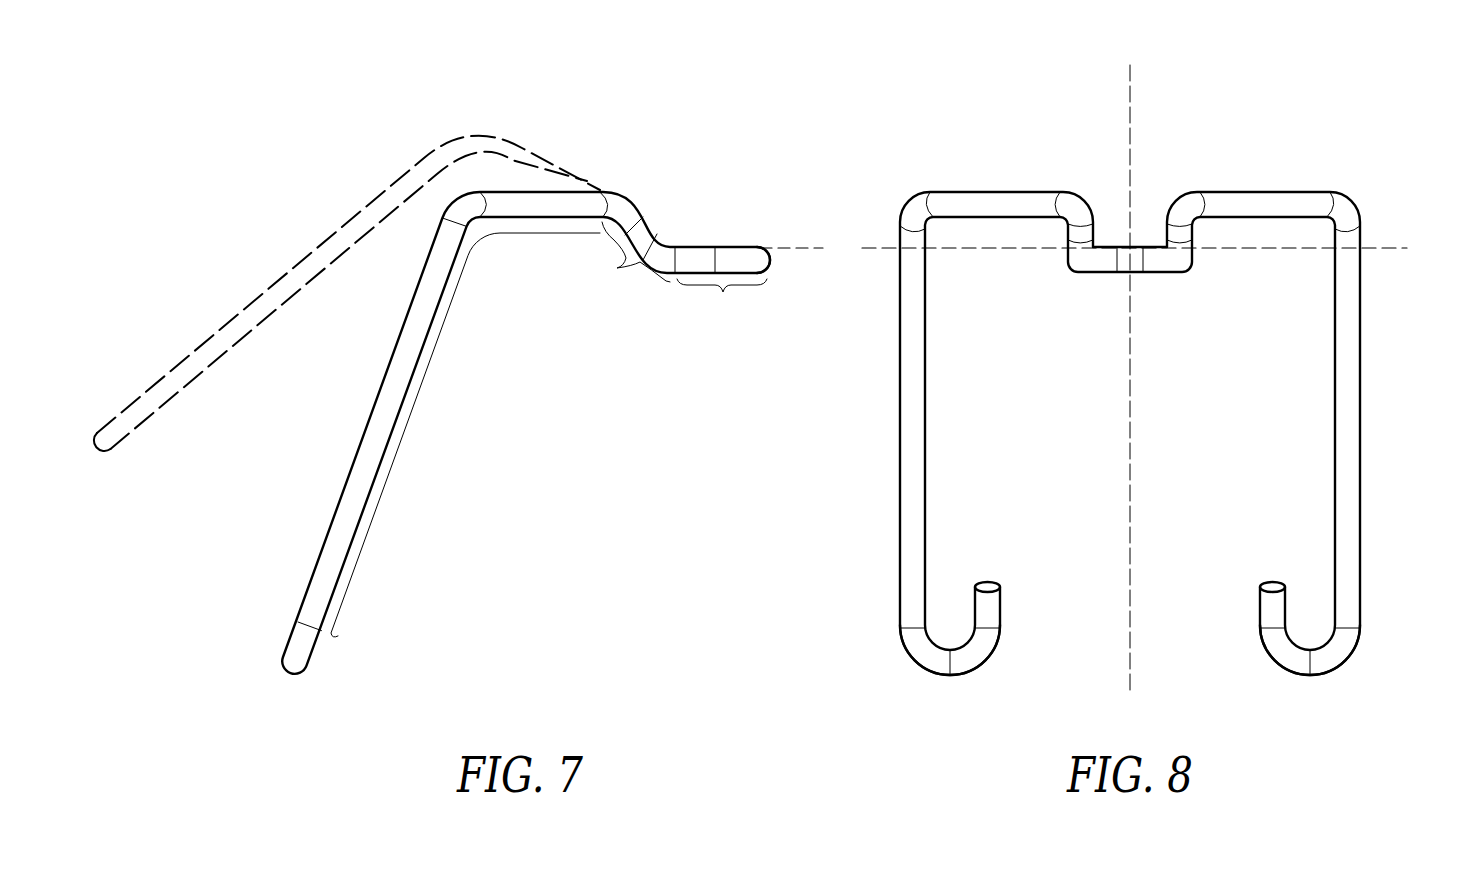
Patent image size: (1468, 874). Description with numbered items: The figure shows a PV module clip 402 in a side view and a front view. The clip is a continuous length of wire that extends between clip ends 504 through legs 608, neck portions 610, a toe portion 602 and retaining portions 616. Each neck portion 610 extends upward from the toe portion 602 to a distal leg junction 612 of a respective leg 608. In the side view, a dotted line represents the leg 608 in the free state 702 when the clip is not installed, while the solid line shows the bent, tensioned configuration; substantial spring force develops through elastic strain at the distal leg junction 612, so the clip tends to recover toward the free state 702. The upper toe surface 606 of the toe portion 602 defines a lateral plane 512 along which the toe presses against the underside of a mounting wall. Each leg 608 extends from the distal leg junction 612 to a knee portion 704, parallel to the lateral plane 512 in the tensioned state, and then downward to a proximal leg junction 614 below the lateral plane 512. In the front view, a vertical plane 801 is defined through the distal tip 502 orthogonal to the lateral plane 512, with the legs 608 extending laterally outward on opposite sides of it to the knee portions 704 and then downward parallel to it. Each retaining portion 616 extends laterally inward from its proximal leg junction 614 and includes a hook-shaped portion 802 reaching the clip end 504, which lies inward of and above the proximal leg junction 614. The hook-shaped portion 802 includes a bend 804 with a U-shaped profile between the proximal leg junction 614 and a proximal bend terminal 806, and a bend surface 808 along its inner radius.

In FIG. 7, the PV module clip 402 is at (673, 77).
In FIG. 8, the PV module clip 402 is at (1313, 68).
In FIG. 7, the distal tip 502 is at (768, 261).
In FIG. 8, the distal tip 502 is at (1135, 256).
In FIG. 8, the clip end 504 is at (985, 583).
In FIG. 7, the lateral plane 512 is at (797, 247).
In FIG. 8, the lateral plane 512 is at (1388, 250).
In FIG. 7, the toe portion 602 is at (723, 293).
In FIG. 7, the upper toe surface 606 is at (733, 247).
In FIG. 7, the leg 608 is at (417, 418).
In FIG. 8, the leg 608 is at (983, 191).
In FIG. 7, the neck portion 610 is at (617, 268).
In FIG. 7, the distal leg junction 612 is at (610, 207).
In FIG. 8, the distal leg junction 612 is at (1057, 192).
In FIG. 7, the proximal leg junction 614 is at (313, 630).
In FIG. 8, the proximal leg junction 614 is at (910, 627).
In FIG. 8, the retaining portion 616 is at (897, 664).
In FIG. 7, the free state 702 is at (205, 330).
In FIG. 7, the knee portion 704 is at (443, 192).
In FIG. 8, the knee portion 704 is at (908, 208).
In FIG. 8, the vertical plane 801 is at (1132, 96).
In FIG. 8, the hook-shaped portion 802 is at (898, 661).
In FIG. 8, the bend 804 is at (935, 660).
In FIG. 8, the proximal bend terminal 806 is at (987, 630).
In FIG. 8, the bend surface 808 is at (932, 638).